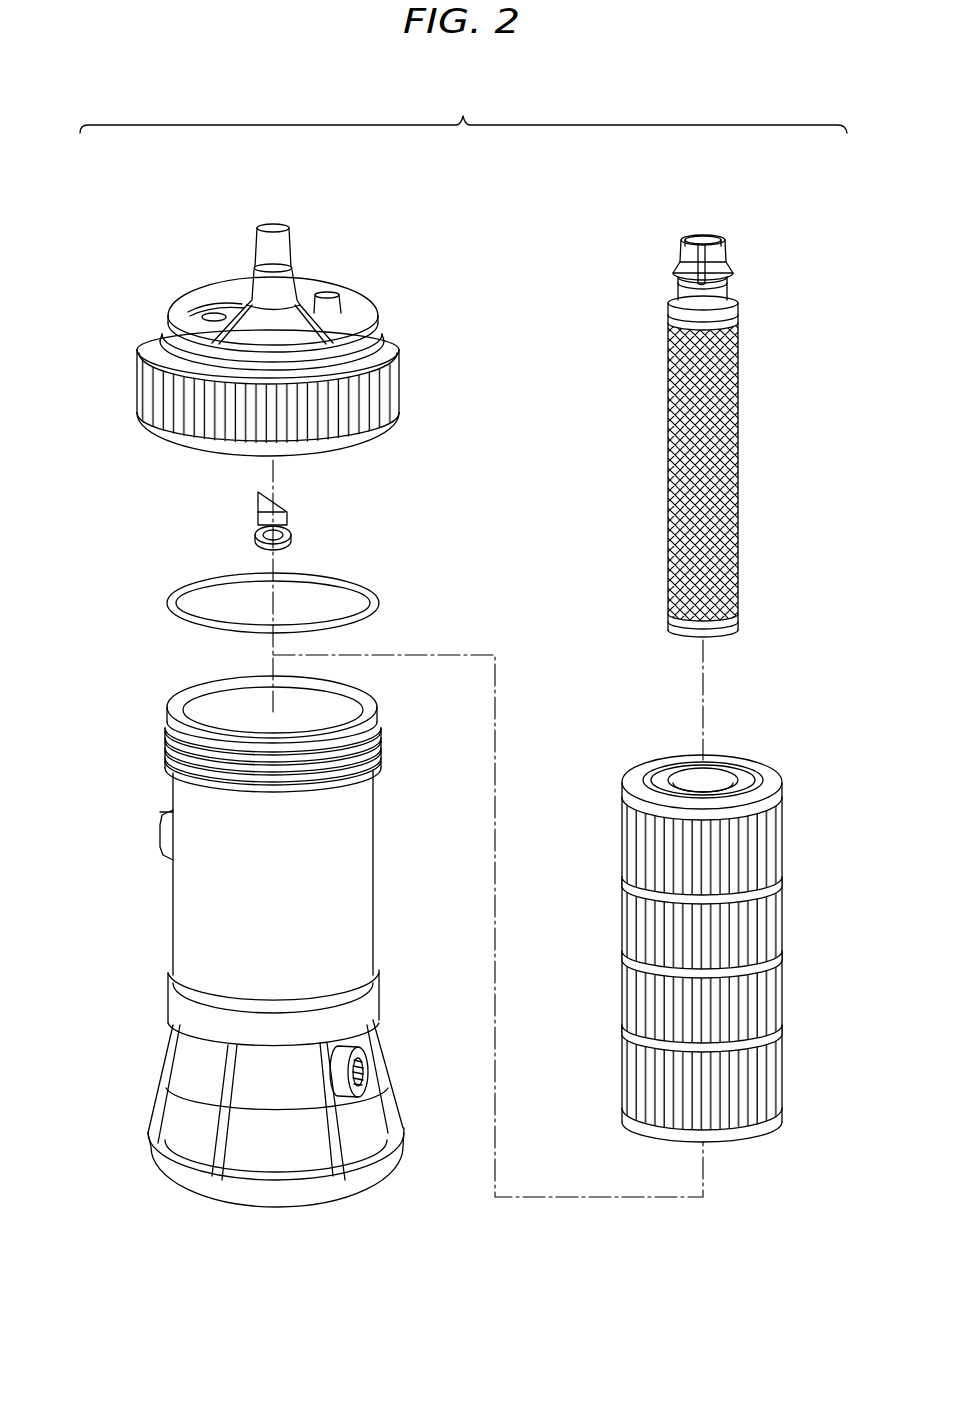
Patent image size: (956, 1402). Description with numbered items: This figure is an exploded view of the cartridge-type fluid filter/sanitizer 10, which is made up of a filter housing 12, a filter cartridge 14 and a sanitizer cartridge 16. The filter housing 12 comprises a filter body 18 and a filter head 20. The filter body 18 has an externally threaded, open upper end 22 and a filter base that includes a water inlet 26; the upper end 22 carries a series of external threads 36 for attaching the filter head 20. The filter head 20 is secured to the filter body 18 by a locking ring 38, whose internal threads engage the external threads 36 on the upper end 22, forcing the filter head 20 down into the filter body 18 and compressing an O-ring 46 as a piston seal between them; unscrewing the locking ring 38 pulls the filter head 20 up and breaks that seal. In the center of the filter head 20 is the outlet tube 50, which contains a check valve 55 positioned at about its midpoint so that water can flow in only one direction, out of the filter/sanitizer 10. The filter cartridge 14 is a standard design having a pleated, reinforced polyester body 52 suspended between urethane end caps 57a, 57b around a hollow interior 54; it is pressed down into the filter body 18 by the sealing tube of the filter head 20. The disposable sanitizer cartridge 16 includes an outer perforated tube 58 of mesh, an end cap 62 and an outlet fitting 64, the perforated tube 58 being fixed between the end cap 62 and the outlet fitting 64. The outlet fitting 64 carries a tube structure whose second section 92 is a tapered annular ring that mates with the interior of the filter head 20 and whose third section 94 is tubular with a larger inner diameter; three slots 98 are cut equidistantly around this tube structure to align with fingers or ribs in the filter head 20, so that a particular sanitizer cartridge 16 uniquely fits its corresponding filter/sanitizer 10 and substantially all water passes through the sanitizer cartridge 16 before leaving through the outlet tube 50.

The cartridge-type fluid filter/sanitizer 10 is at (463, 109).
The filter housing 12 is at (122, 455).
The filter cartridge 14 is at (805, 905).
The sanitizer cartridge 16 is at (762, 470).
The filter body 18 is at (271, 941).
The filter head 20 is at (355, 308).
The upper end 22 is at (172, 787).
The water inlet 26 is at (362, 1072).
The external threads 36 is at (383, 752).
The locking ring 38 is at (400, 370).
The O-ring 46 is at (170, 602).
The outlet tube 50 is at (256, 252).
The pleated, reinforced, polyester body 52 is at (762, 993).
The hollow interior 54 is at (718, 775).
The check valve 55 is at (280, 512).
The upper end cap 57a is at (775, 777).
The lower end cap 57b is at (750, 1135).
The outer perforated tube 58 is at (668, 520).
The end cap 62 is at (680, 640).
The outlet fitting 64 is at (752, 274).
The second section 92 is at (678, 278).
The third section 94 is at (678, 256).
The slots 98 is at (703, 255).